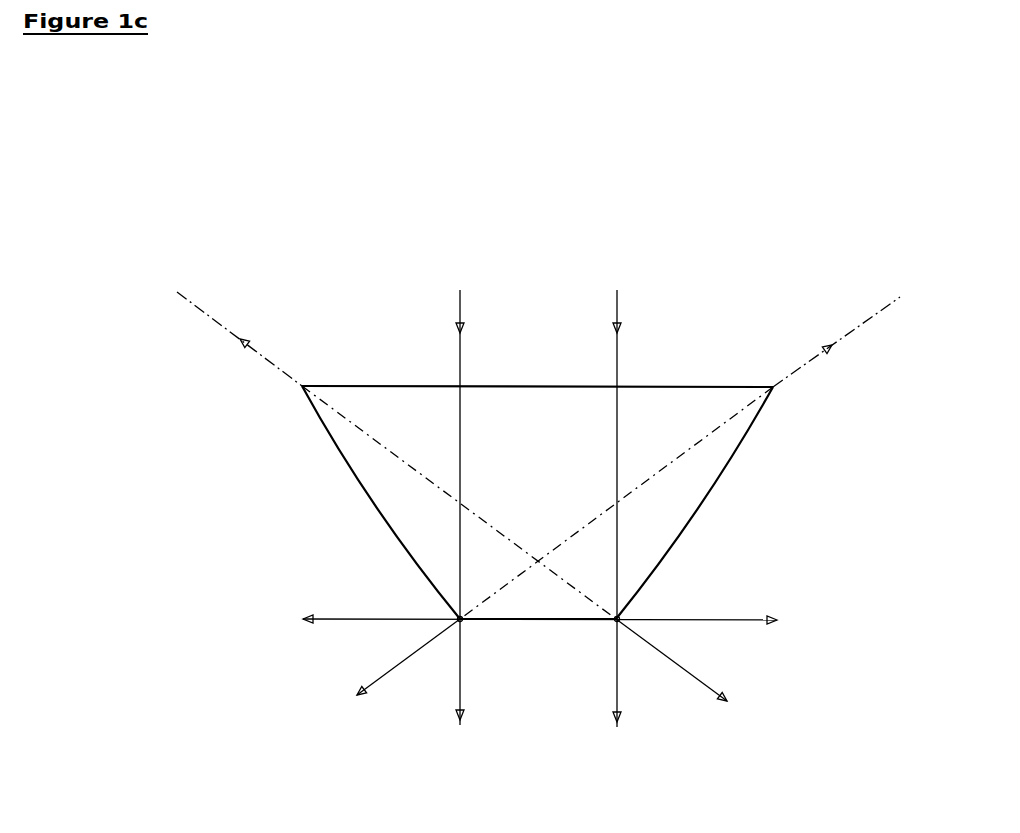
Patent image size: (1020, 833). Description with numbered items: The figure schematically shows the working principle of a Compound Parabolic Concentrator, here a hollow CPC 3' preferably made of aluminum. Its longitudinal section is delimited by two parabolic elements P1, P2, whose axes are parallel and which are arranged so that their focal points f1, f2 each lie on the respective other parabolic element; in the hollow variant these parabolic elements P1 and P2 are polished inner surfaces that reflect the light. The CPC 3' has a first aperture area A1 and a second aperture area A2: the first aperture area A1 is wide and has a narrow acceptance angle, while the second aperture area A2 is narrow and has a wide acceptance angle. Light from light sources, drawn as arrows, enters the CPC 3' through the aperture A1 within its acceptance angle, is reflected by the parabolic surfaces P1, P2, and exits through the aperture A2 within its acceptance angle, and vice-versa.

The hollow CPC 3' is at (538, 497).
The first aperture area A1 is at (512, 383).
The second aperture area A2 is at (527, 620).
The first parabolic element P1 is at (310, 502).
The second parabolic element P2 is at (766, 503).
The focal point f1 is at (623, 630).
The focal point f2 is at (455, 627).